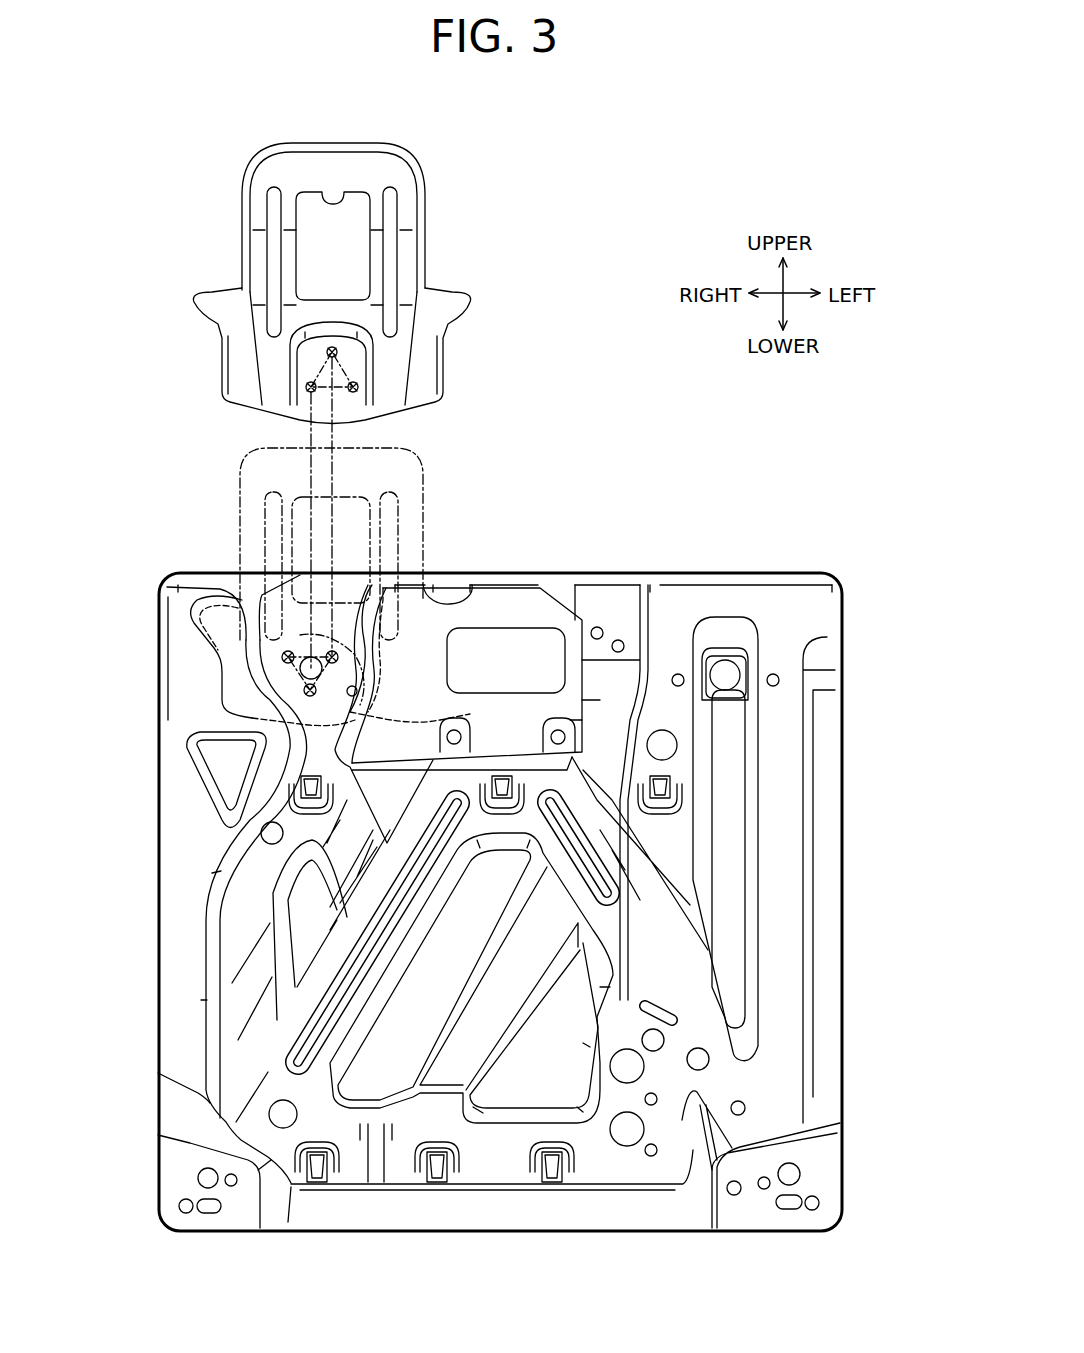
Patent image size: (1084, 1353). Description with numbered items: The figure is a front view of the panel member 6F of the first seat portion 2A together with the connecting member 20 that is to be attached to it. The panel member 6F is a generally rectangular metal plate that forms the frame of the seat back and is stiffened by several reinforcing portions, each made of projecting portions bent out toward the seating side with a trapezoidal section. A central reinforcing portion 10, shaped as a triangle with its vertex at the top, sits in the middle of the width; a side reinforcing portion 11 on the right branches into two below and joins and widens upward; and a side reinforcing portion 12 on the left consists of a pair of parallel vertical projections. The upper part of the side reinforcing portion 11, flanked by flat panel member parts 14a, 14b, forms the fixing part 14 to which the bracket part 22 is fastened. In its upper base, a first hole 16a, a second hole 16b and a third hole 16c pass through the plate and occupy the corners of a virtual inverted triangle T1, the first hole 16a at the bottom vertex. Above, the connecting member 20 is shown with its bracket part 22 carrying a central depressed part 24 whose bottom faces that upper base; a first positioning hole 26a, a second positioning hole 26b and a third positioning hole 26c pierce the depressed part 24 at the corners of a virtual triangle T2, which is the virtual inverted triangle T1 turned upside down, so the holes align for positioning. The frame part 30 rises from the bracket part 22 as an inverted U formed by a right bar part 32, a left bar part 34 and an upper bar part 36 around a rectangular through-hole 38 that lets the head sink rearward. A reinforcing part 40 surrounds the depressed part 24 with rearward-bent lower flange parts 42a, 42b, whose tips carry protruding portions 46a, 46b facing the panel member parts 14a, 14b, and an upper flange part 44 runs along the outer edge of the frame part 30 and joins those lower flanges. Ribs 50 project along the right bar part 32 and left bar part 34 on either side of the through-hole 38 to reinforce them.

The first seat portion 2A is at (666, 184).
The panel member 6F is at (743, 552).
The central reinforcing portion 10 is at (363, 990).
The side reinforcing portion 11 is at (250, 895).
The side reinforcing portion 12 is at (780, 888).
The fixing part 14 is at (455, 590).
The panel member part 14a is at (262, 693).
The panel member part 14b is at (425, 681).
The first hole 16a is at (306, 692).
The second hole 16b is at (282, 657).
The third hole 16c is at (330, 652).
The virtual inverted triangle T1 is at (355, 715).
The connecting member 20 is at (460, 191).
The bracket part 22 is at (436, 365).
The depressed part 24 is at (345, 408).
The first positioning hole 26a is at (328, 350).
The second positioning hole 26b is at (307, 385).
The third positioning hole 26c is at (350, 389).
The frame part 30 is at (271, 173).
The right bar part 32 is at (231, 230).
The left bar part 34 is at (436, 230).
The upper bar part 36 is at (304, 132).
The through-hole 38 is at (345, 194).
The reinforcing part 40 is at (405, 338).
The lower flange part 42a is at (257, 386).
The lower flange part 42b is at (408, 386).
The upper flange part 44 is at (412, 175).
The protruding portion 46a is at (200, 298).
The protruding portion 46b is at (462, 298).
The rib 50 is at (392, 262).
The virtual triangle T2 is at (363, 372).